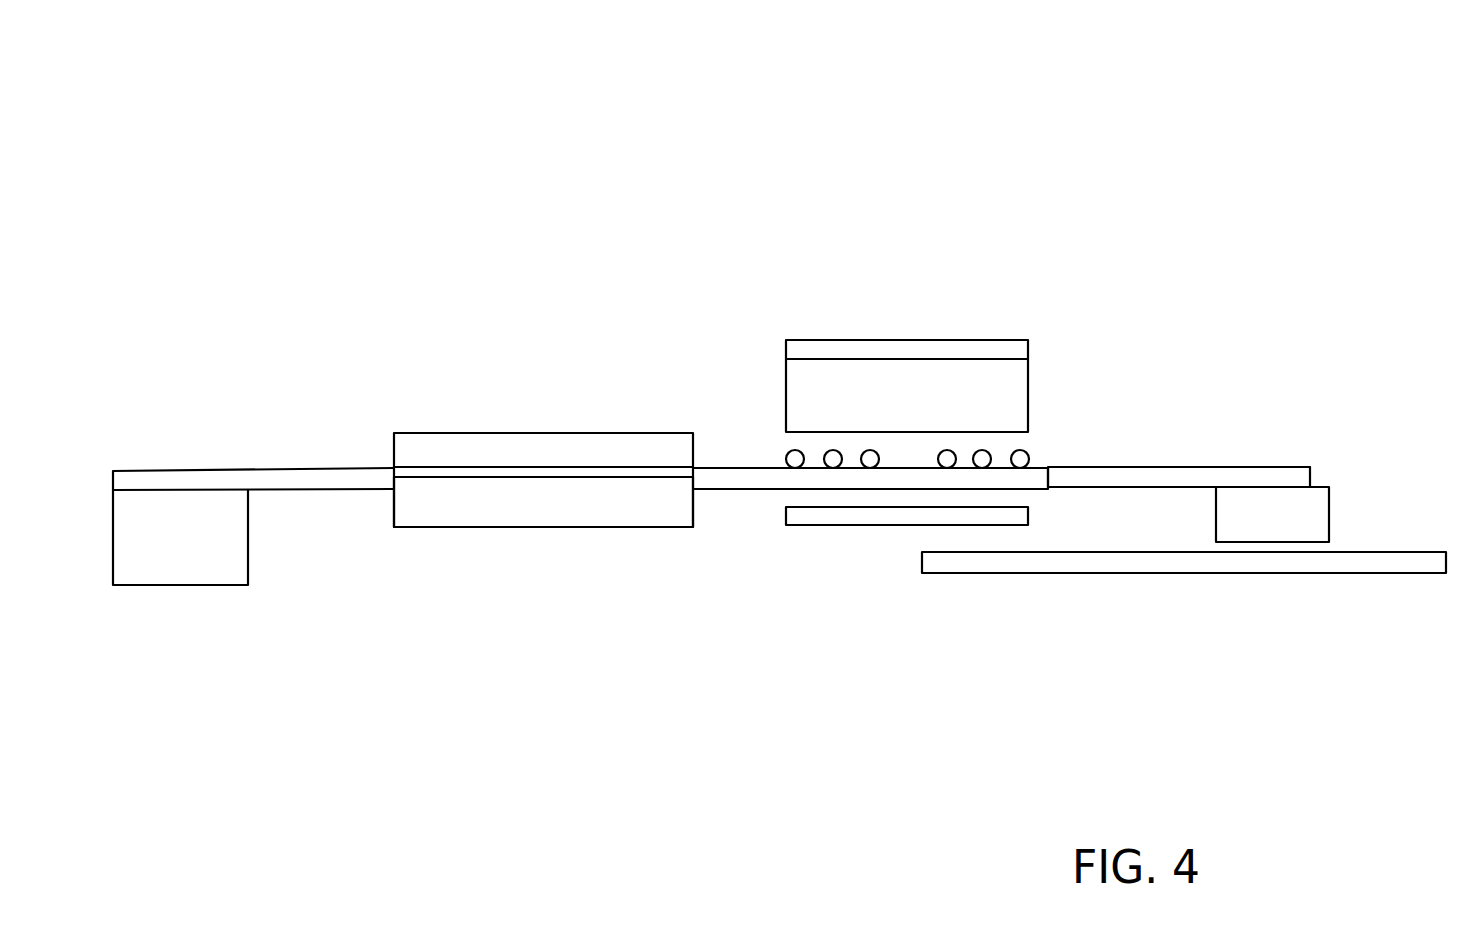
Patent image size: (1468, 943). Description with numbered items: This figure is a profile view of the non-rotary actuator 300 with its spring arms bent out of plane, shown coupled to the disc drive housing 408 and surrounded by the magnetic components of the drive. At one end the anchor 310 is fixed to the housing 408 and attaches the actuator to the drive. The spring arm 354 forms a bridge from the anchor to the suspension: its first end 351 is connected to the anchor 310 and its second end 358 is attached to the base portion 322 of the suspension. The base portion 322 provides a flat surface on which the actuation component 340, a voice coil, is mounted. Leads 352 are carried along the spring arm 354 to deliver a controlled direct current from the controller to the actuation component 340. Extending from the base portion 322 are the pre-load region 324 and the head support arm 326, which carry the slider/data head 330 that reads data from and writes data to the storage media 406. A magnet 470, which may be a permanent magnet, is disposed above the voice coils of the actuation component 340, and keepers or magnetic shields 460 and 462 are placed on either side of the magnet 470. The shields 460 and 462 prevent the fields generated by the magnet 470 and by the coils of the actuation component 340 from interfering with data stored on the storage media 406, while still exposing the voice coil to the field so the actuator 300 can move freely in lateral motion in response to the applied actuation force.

The actuator 300 is at (739, 115).
The anchor 310 is at (180, 471).
The base portion 322 is at (760, 468).
The pre-load region 324 is at (1093, 467).
The head support arm 326 is at (1230, 467).
The slider/data head 330 is at (1320, 502).
The actuation component 340 is at (1022, 457).
The first end of spring arm 351 is at (394, 480).
The leads 352 is at (543, 480).
The spring arm 354 is at (493, 442).
The second end of spring arm 358 is at (693, 480).
The storage media 406 is at (1192, 565).
The disc drive housing 408 is at (190, 573).
The magnetic shield 460 is at (807, 345).
The magnetic shield 462 is at (882, 525).
The magnet 470 is at (1007, 402).